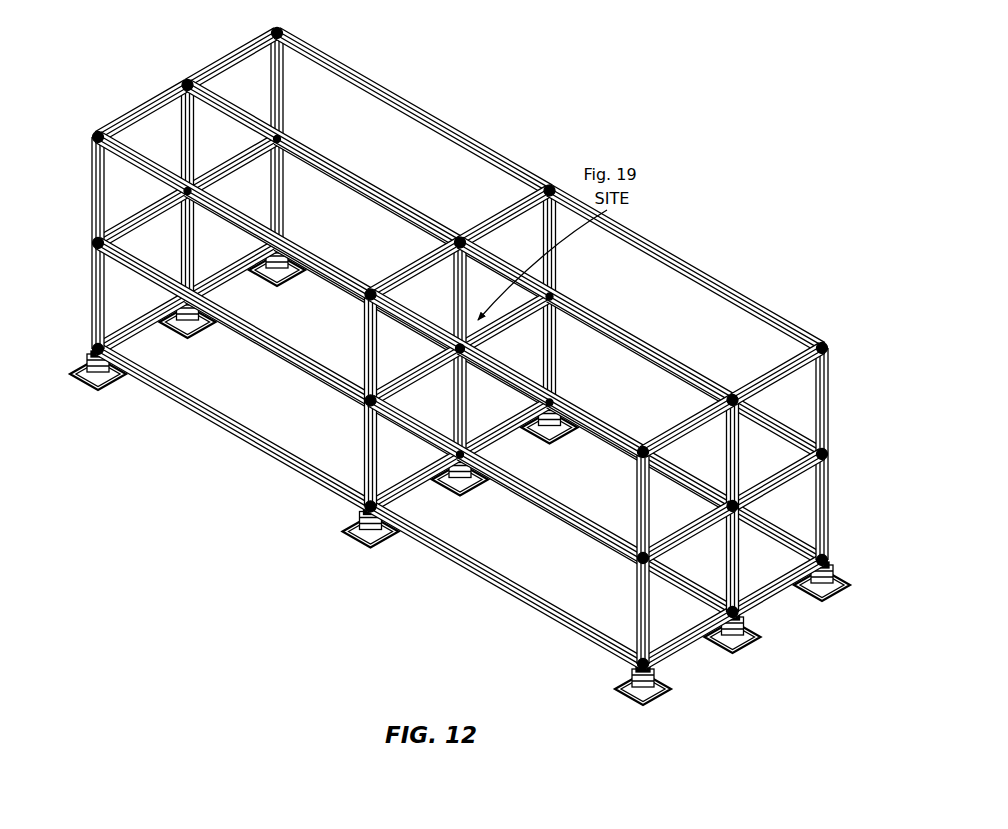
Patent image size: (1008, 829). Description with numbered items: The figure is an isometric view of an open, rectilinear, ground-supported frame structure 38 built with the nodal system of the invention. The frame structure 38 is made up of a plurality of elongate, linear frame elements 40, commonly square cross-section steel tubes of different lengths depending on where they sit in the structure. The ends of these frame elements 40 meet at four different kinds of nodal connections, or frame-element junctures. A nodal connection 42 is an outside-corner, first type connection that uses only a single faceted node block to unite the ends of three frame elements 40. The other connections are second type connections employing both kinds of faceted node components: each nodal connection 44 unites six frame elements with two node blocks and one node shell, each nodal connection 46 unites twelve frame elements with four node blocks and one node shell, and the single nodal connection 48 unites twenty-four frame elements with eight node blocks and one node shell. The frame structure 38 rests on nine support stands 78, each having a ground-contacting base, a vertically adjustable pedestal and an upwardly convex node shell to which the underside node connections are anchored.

The frame structure 38 is at (496, 96).
The frame elements 40 is at (448, 143).
The nodal connection 42 is at (268, 28).
The nodal connection 44 is at (181, 78).
The nodal connection 46 is at (457, 228).
The nodal connection 48 is at (444, 314).
The support stands 78 is at (78, 352).